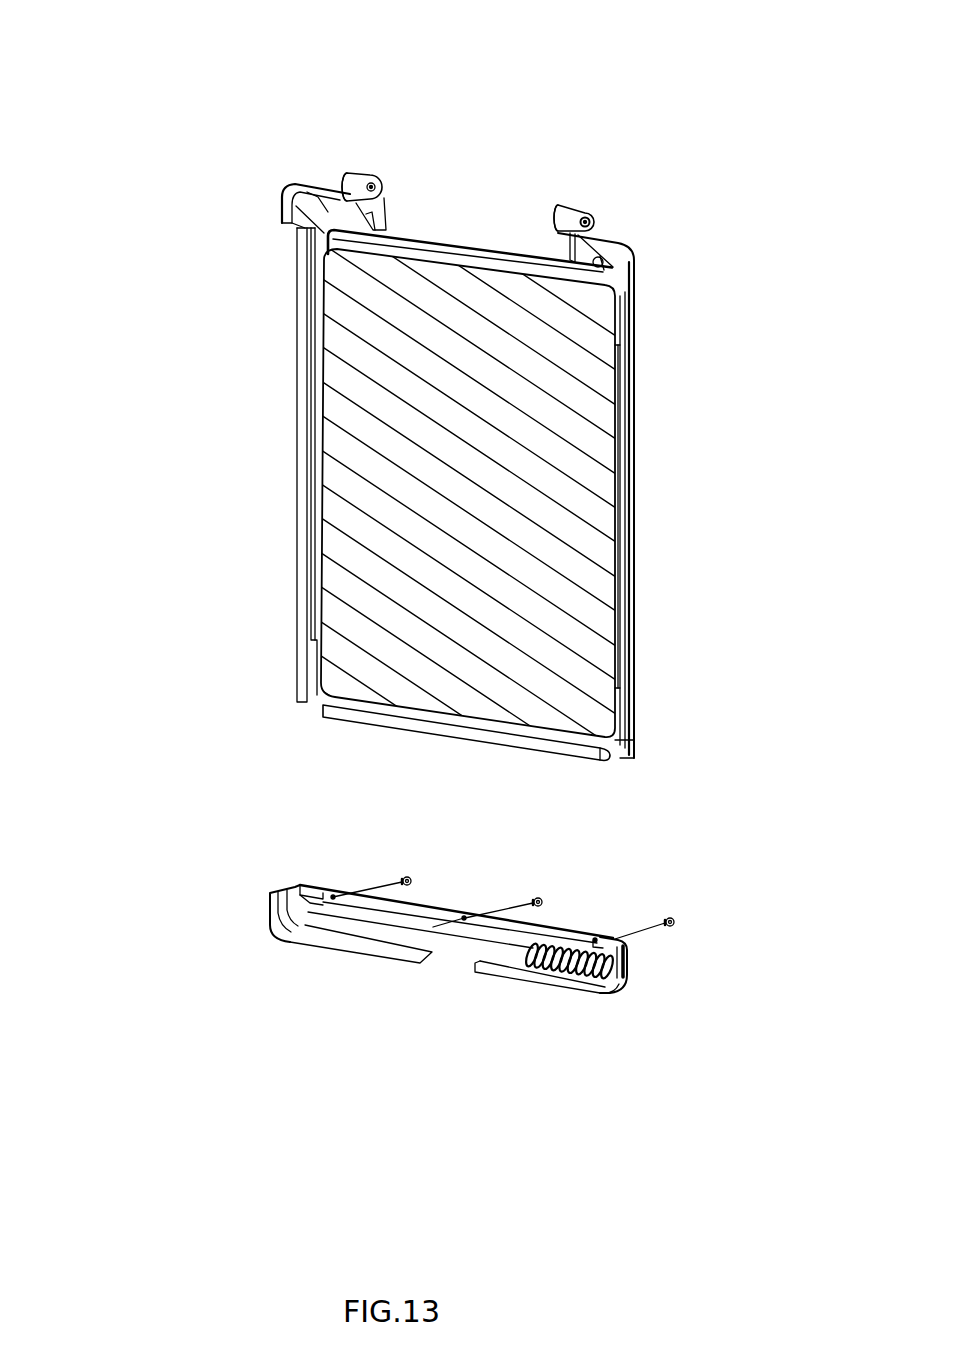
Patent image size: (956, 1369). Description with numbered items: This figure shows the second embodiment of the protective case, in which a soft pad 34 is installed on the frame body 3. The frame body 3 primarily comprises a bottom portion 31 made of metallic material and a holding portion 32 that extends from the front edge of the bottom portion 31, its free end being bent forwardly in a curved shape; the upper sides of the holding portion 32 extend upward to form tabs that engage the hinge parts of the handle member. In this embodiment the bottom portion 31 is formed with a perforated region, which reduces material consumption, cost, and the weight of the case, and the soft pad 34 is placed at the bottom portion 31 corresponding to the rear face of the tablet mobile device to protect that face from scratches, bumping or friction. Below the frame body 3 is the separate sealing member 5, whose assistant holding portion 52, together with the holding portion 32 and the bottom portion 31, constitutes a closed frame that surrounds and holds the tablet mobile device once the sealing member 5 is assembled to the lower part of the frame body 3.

The frame body 3 is at (262, 106).
The bottom portion 31 is at (634, 243).
The holding portion 32 is at (282, 212).
The soft pad 34 is at (558, 412).
The sealing member 5 is at (635, 1098).
The assistant holding portion 52 is at (272, 923).